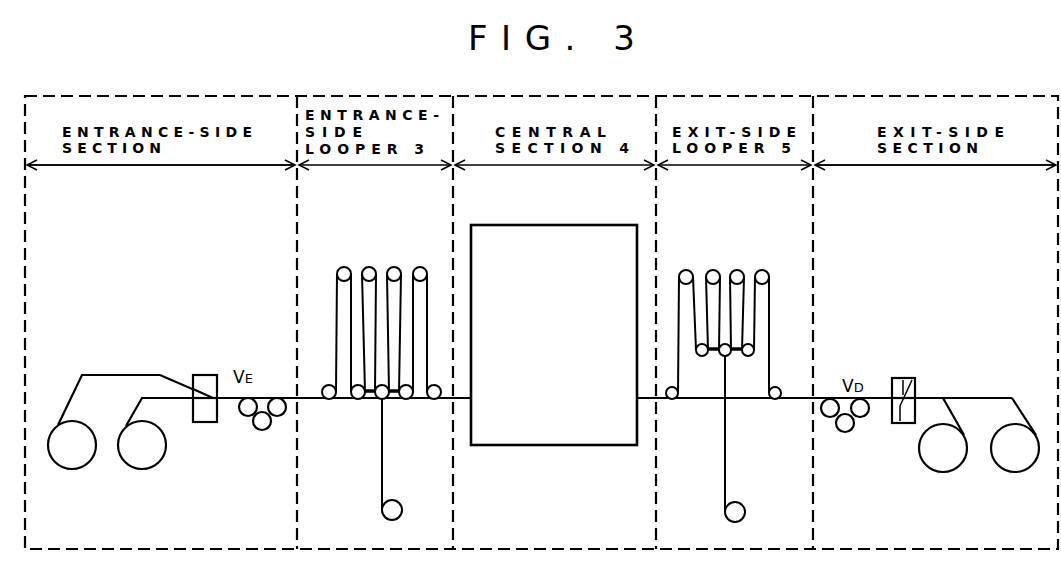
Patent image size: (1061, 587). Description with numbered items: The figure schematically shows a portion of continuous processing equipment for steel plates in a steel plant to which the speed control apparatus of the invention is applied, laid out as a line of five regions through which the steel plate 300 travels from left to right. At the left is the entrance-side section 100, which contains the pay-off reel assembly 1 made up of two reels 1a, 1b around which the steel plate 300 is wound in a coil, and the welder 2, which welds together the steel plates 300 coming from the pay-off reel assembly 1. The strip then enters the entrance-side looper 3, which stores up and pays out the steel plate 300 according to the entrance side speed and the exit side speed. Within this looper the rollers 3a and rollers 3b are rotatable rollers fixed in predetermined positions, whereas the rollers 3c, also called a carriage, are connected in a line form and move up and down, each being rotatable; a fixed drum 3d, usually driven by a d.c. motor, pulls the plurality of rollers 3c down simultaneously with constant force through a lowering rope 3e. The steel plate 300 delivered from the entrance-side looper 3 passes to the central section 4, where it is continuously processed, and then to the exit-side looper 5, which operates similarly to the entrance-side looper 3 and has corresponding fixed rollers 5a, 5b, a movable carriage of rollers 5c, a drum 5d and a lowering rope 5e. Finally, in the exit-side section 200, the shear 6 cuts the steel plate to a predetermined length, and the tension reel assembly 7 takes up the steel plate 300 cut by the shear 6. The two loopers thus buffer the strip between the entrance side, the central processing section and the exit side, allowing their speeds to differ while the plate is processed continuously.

The entrance-side section 100 is at (208, 92).
The exit-side section 200 is at (962, 77).
The pay-off reel assembly 1 is at (130, 455).
The reel 1a is at (80, 468).
The reel 1b is at (150, 468).
The welder 2 is at (198, 374).
The steel plate 300 is at (227, 396).
The entrance-side looper 3 is at (371, 370).
The roller 3a is at (329, 399).
The roller 3b is at (368, 270).
The roller (carriage) 3c is at (358, 399).
The fixed drum 3d is at (390, 518).
The lowering rope 3e is at (382, 486).
The central section 4 is at (563, 225).
The exit-side looper 5 is at (728, 366).
The roller 5a is at (672, 399).
The roller 5b is at (712, 270).
The roller (carriage) 5c is at (702, 356).
The fixed drum 5d is at (739, 514).
The lowering rope 5e is at (726, 472).
The shear 6 is at (905, 378).
The tension reel assembly 7 is at (950, 460).